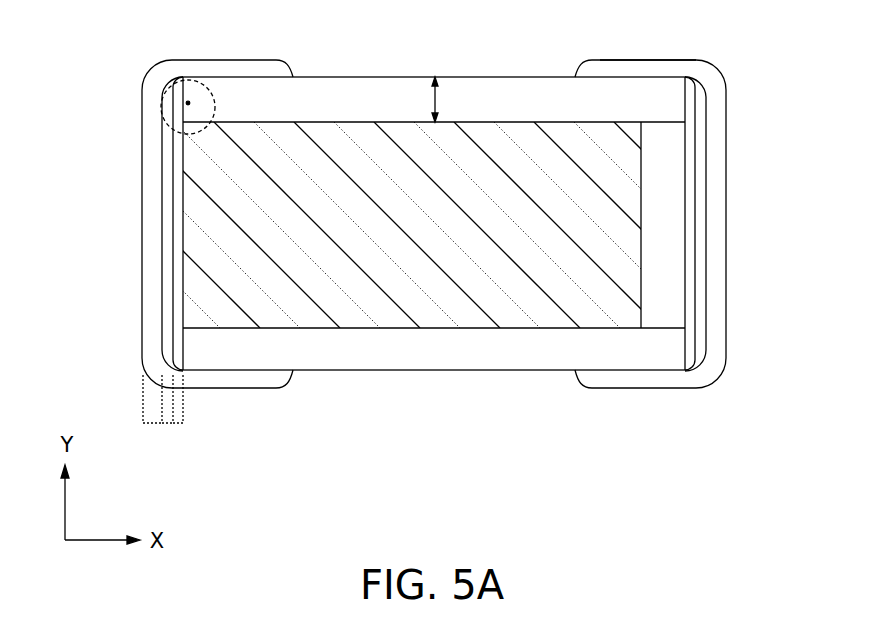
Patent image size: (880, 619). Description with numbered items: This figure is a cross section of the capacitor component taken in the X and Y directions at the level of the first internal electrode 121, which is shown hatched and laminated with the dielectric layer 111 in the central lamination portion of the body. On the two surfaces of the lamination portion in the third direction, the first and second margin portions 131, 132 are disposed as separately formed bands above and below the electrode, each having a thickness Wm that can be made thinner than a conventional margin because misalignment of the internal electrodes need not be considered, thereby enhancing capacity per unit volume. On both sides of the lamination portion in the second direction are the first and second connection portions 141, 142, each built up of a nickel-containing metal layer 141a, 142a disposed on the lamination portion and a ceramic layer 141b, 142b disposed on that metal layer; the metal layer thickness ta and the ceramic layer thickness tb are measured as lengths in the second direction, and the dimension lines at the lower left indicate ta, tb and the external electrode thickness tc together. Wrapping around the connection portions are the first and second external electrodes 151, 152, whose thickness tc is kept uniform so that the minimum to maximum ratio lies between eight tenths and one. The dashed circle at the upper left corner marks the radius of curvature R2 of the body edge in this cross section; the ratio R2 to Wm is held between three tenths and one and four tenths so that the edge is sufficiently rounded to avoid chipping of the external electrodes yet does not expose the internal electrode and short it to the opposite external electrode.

The dielectric layer 111 is at (665, 305).
The first internal electrode 121 is at (420, 300).
The first margin portion 131 is at (505, 345).
The second margin portion 132 is at (547, 95).
The first connection portion 141 is at (151, 224).
The metal layer 141a is at (168, 166).
The ceramic layer 141b is at (62, 155).
The second connection portion 142 is at (716, 224).
The metal layer 142a is at (695, 166).
The ceramic layer 142b is at (807, 155).
The first external electrode 151 is at (188, 100).
The second external electrode 152 is at (657, 67).
The radius of curvature of the edge of the body R2 is at (225, 102).
The thickness of the margin portion Wm is at (445, 97).
The thickness of the metal layer ta is at (178, 424).
The thickness of the ceramic layer tb is at (167, 424).
The thickness of the external electrode tc is at (152, 424).